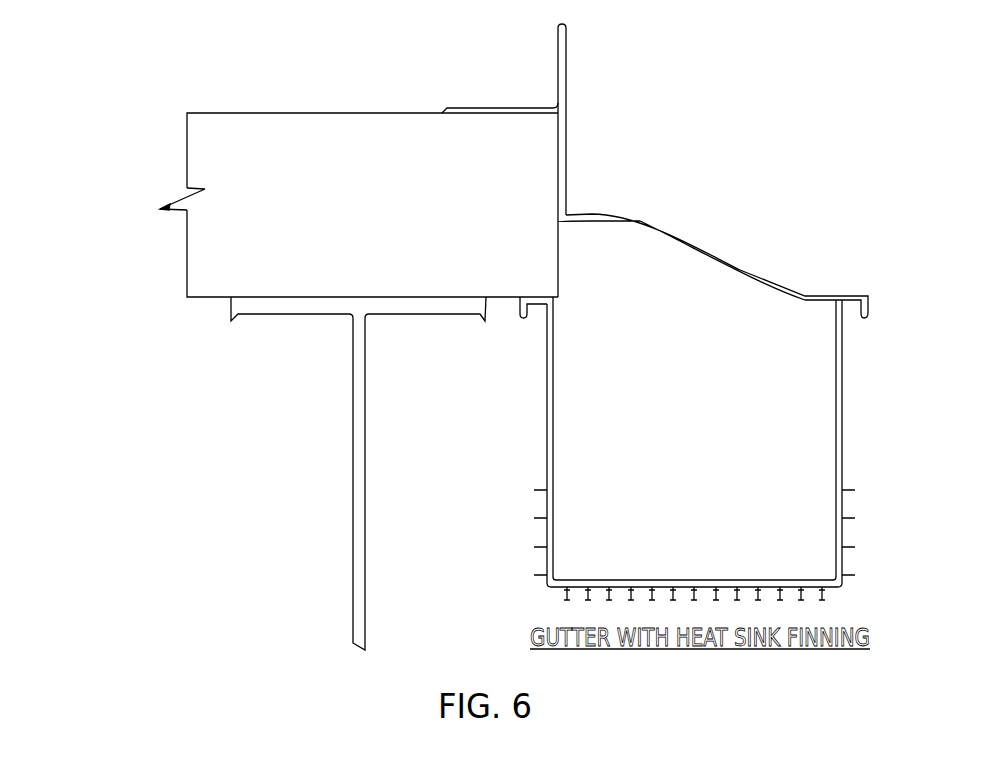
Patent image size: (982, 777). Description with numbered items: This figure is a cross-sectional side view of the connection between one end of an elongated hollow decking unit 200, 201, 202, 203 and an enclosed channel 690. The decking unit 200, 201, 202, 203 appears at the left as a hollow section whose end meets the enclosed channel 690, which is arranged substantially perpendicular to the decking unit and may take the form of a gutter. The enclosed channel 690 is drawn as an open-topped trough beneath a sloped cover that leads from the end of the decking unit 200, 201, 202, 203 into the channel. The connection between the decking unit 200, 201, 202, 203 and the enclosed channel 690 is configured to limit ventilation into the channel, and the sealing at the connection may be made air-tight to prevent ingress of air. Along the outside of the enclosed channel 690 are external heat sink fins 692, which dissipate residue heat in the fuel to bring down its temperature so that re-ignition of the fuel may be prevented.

The elongated hollow decking unit 200 is at (460, 337).
The elongated hollow decking unit 201 is at (460, 337).
The elongated hollow decking unit 202 is at (460, 337).
The panel 203 is at (222, 90).
The enclosed channel 690 is at (842, 395).
The external heat sink fins 692 is at (842, 490).